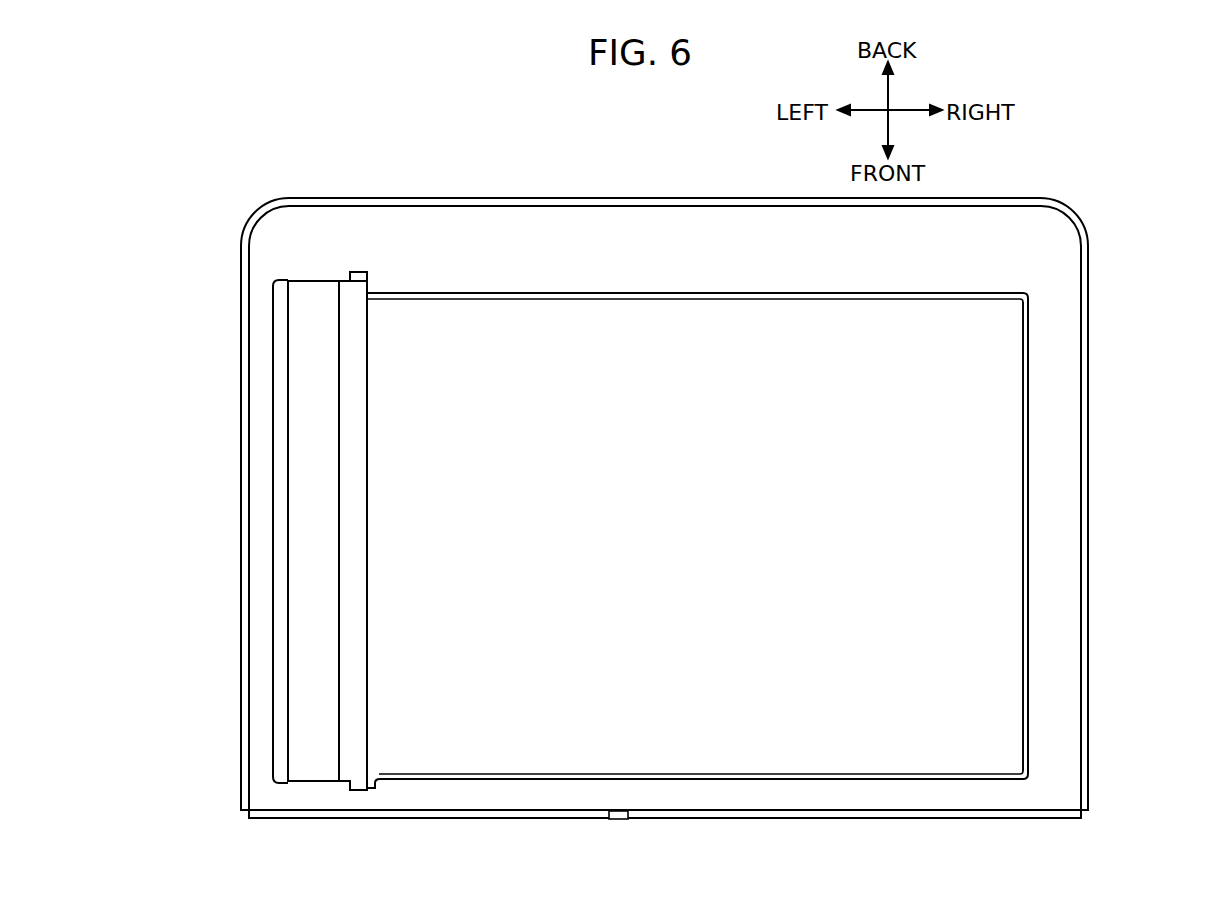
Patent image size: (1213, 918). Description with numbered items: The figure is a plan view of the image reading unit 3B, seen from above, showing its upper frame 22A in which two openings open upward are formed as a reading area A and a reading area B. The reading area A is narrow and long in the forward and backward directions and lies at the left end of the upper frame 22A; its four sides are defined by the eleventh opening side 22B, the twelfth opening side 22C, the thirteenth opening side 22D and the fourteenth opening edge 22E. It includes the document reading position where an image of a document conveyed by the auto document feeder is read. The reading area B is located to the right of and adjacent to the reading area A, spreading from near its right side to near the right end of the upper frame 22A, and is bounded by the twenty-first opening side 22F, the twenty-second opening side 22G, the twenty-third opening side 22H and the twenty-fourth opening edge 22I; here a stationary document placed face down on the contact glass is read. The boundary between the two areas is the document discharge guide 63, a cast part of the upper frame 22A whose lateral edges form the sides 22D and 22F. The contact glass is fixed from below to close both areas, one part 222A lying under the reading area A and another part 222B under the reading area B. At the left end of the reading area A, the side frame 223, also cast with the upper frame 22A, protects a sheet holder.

The image reading unit cover 3B is at (1097, 212).
The upper frame 22A is at (1058, 427).
The eleventh opening side 22B is at (288, 397).
The twelfth opening side 22C is at (304, 281).
The thirteenth opening side 22D is at (340, 362).
The fourteenth opening edge 22E is at (308, 783).
The twenty-first opening side 22F is at (367, 590).
The twenty-second opening side 22G is at (667, 299).
The twenty-third opening side 22H is at (1025, 568).
The twenty-fourth opening edge 22I is at (698, 773).
The document discharge guide 63 is at (352, 497).
The side frame 223 is at (280, 322).
The left edge portion 222A is at (312, 688).
The inner peripheral edge 222B is at (995, 652).
The reading area A is at (331, 281).
The reading area B is at (572, 293).